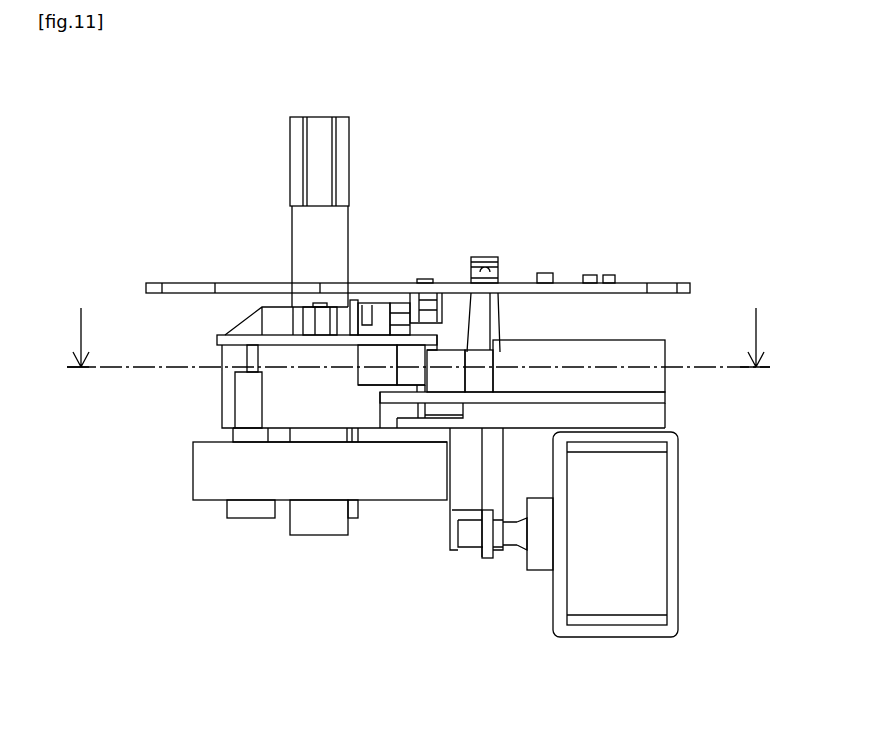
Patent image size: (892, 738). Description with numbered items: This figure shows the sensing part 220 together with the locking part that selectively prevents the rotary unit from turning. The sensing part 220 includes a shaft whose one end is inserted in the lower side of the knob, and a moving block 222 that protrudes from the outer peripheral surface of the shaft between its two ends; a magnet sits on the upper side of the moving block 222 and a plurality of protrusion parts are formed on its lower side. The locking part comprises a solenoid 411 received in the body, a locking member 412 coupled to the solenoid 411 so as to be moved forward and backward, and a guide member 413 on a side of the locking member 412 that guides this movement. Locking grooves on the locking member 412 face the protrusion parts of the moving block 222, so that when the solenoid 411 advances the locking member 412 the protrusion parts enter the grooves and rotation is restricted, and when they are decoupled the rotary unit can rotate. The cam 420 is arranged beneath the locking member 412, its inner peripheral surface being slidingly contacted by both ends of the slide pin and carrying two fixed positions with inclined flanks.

The sensing part 220 is at (272, 158).
The moving block 222 is at (223, 338).
The solenoid 411 is at (607, 592).
The locking member 412 is at (462, 493).
The guide member 413 is at (657, 382).
The cam 420 is at (203, 480).